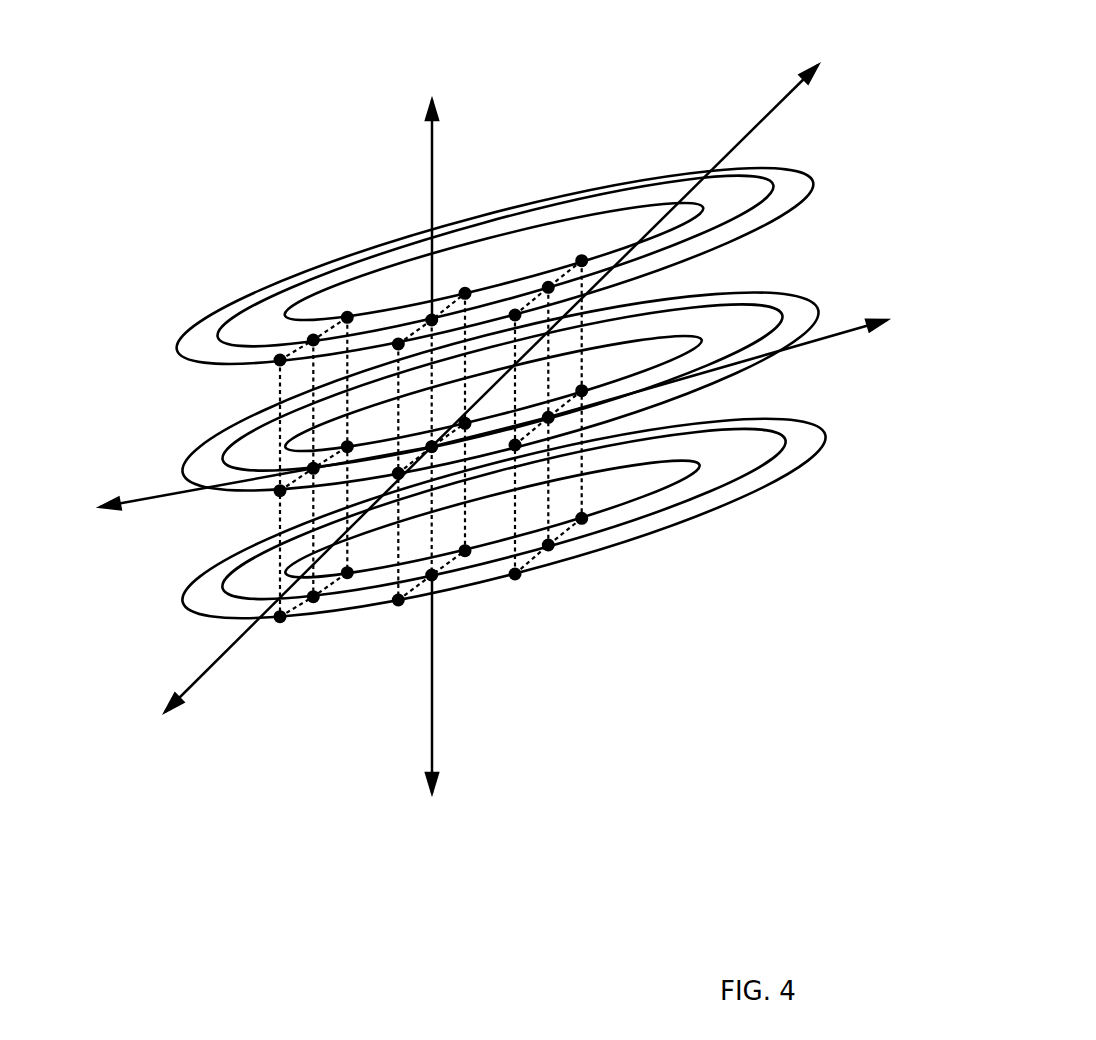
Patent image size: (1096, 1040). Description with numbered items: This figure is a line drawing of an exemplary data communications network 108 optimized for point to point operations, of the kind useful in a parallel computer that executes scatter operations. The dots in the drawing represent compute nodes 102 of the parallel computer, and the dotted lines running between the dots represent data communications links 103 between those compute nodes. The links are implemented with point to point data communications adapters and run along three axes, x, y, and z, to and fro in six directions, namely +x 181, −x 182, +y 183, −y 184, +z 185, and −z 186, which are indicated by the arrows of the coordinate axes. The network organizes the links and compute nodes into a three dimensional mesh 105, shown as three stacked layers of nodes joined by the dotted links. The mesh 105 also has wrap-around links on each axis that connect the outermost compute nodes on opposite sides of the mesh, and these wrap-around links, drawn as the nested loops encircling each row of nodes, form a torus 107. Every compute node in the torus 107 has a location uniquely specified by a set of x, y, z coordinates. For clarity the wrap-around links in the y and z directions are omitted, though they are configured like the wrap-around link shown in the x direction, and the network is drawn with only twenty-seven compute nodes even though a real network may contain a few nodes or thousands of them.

The compute nodes 102 is at (515, 574).
The data communications links 103 is at (280, 393).
The three dimensional mesh 105 is at (463, 470).
The torus 107 is at (268, 270).
The data communications network optimized for point to point operations 108 is at (388, 1020).
The +x direction 181 is at (923, 348).
The −x direction 182 is at (98, 546).
The +y direction 183 is at (865, 91).
The −y direction 184 is at (158, 760).
The +z direction 185 is at (448, 92).
The −z direction 186 is at (450, 851).